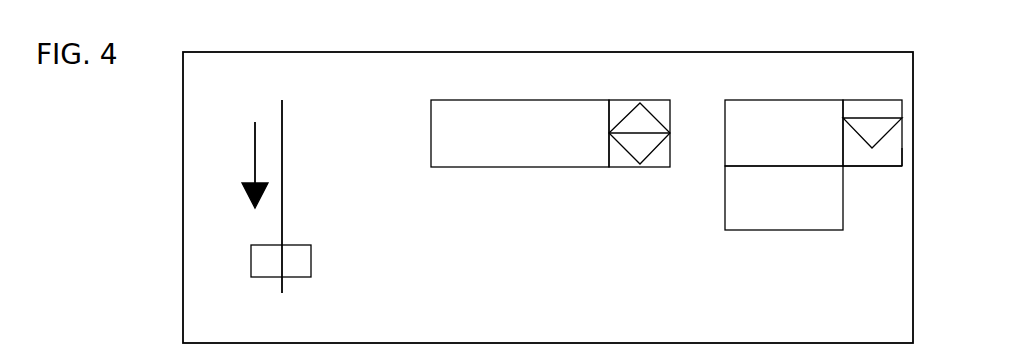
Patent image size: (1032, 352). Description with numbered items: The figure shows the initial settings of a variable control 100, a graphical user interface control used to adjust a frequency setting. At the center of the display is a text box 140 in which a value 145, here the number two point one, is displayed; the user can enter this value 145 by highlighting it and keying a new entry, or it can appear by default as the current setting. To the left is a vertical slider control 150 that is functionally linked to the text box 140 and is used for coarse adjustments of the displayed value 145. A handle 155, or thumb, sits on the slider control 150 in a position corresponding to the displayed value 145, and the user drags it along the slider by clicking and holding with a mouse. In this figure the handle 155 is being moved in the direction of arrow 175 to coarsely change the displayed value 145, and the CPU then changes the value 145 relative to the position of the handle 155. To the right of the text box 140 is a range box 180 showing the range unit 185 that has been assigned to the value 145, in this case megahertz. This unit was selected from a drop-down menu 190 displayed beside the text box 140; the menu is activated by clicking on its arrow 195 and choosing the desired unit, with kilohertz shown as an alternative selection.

The variable control 100 is at (643, 52).
The text box 140 is at (477, 100).
The value 145 is at (527, 121).
The slider control 150 is at (282, 180).
The handle 155 is at (311, 261).
The arrow 175 is at (253, 161).
The range box 180 is at (745, 100).
The range unit 185 is at (795, 121).
The drop-down menu 190 is at (770, 230).
The arrow 195 is at (880, 166).